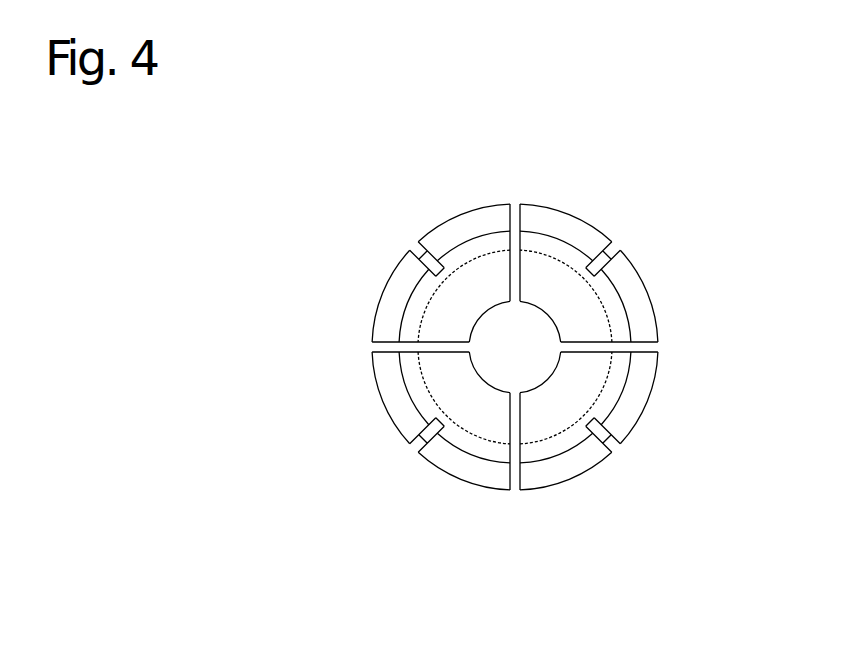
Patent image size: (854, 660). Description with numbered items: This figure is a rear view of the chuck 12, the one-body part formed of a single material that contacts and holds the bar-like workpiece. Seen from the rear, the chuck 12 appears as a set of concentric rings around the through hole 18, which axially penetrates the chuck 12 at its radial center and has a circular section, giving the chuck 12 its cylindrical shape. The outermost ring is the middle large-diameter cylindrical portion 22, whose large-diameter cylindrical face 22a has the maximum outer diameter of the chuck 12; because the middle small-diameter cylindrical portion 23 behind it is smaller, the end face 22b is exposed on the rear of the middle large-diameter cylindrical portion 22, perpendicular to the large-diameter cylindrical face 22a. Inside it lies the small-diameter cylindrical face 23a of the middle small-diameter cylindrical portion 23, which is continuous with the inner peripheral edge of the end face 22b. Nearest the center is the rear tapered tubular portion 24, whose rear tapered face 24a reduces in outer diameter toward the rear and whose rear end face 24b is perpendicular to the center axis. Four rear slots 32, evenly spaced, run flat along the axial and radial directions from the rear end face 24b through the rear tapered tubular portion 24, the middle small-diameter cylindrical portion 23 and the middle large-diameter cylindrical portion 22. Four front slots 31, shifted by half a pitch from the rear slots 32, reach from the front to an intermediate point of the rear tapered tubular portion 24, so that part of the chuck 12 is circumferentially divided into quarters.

The chuck 12 is at (642, 209).
The through hole 18 is at (530, 332).
The middle large-diameter cylindrical portion 22 is at (636, 268).
The large-diameter cylindrical face 22a is at (452, 477).
The end face 22b is at (568, 462).
The middle small-diameter cylindrical portion 23 is at (568, 238).
The small-diameter cylindrical face 23a is at (383, 408).
The rear tapered tubular portion 24 is at (470, 278).
The rear tapered face 24a is at (413, 300).
The rear end face 24b is at (497, 268).
The front slot 31 is at (603, 247).
The rear slot 32 is at (522, 208).